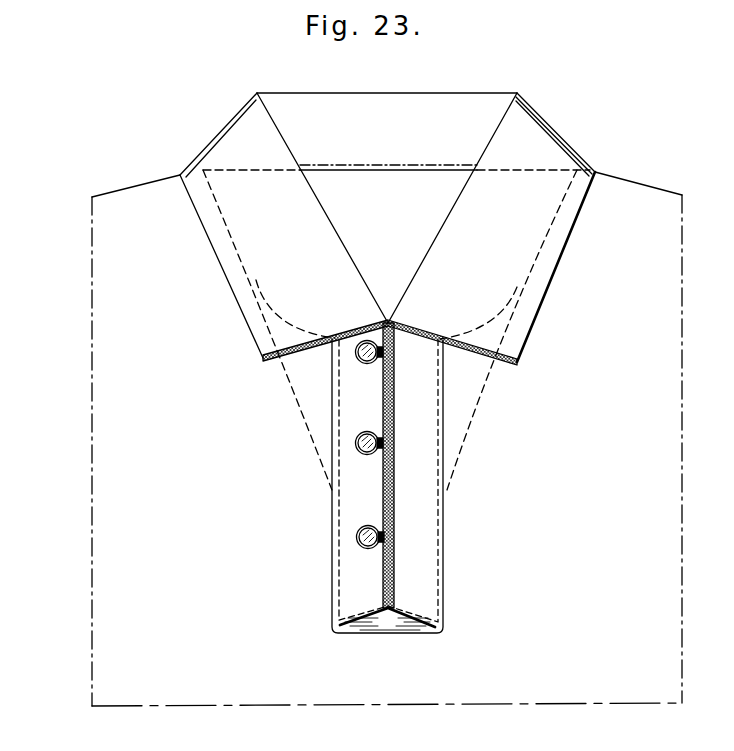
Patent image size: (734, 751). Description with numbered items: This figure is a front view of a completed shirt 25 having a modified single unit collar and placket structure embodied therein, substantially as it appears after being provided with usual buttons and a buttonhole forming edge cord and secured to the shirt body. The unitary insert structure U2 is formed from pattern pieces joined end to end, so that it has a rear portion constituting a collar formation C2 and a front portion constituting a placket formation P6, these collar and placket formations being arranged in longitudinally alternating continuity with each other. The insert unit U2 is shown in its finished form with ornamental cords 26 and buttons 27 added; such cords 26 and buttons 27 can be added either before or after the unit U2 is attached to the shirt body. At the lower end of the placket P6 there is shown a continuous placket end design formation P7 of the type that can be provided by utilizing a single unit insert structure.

The shirt 25 is at (65, 510).
The ornamental cord 26 is at (383, 406).
The buttons 27 is at (356, 443).
The collar formation C2 is at (573, 275).
The unitary insert structure U2 is at (480, 588).
The placket formation P6 is at (460, 560).
The continuous placket end design formation P7 is at (427, 645).